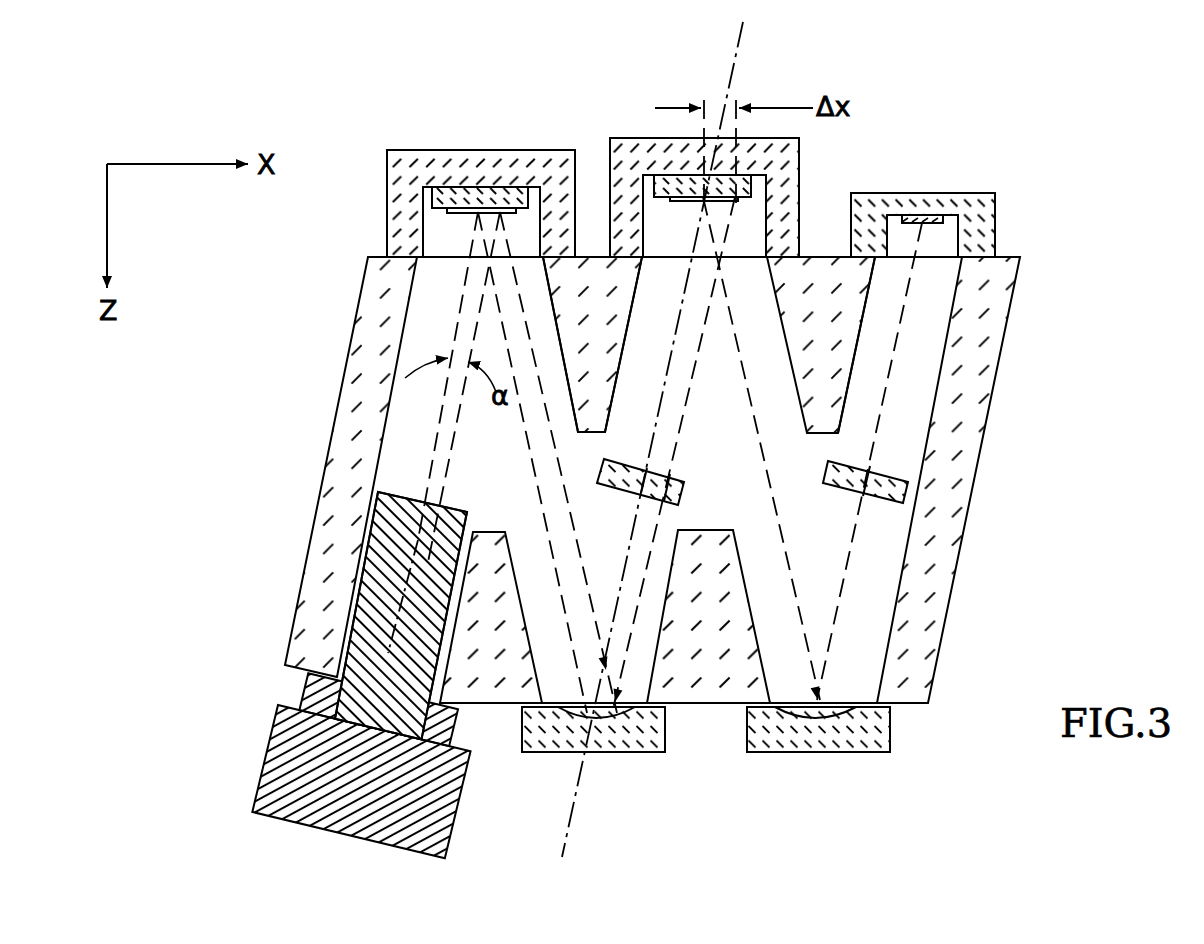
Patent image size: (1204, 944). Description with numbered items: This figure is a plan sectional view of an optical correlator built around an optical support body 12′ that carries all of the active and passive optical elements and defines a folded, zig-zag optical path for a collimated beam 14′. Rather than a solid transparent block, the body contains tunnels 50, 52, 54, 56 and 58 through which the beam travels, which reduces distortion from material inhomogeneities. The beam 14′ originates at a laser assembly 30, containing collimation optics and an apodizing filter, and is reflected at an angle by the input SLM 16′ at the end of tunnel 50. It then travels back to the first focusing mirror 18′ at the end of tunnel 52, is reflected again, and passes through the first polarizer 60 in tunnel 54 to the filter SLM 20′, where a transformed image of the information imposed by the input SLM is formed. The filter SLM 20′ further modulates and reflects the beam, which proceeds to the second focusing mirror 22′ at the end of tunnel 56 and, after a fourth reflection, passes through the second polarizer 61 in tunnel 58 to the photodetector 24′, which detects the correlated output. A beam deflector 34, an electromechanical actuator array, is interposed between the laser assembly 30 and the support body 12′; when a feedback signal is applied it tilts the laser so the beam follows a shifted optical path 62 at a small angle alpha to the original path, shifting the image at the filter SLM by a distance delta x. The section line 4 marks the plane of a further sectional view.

The section line 4- 4 is at (745, 43).
The optical support body 12′ is at (316, 500).
The beam 14′ is at (437, 474).
The input SLM 16′ is at (420, 150).
The first focusing mirror 18′ is at (592, 752).
The filter SLM 20′ is at (654, 138).
The second focusing mirror 22′ is at (817, 752).
The photodetector 24′ is at (964, 193).
The laser assembly 30 is at (458, 822).
The beam deflector 34 is at (460, 728).
The tunnel 50 is at (400, 352).
The tunnel 52 is at (515, 548).
The tunnel 54 is at (617, 358).
The tunnel 56 is at (782, 306).
The tunnel 58 is at (853, 365).
The first polarizer 60 is at (675, 477).
The second polarizer 61 is at (843, 490).
The shifted optical path 62 is at (443, 397).